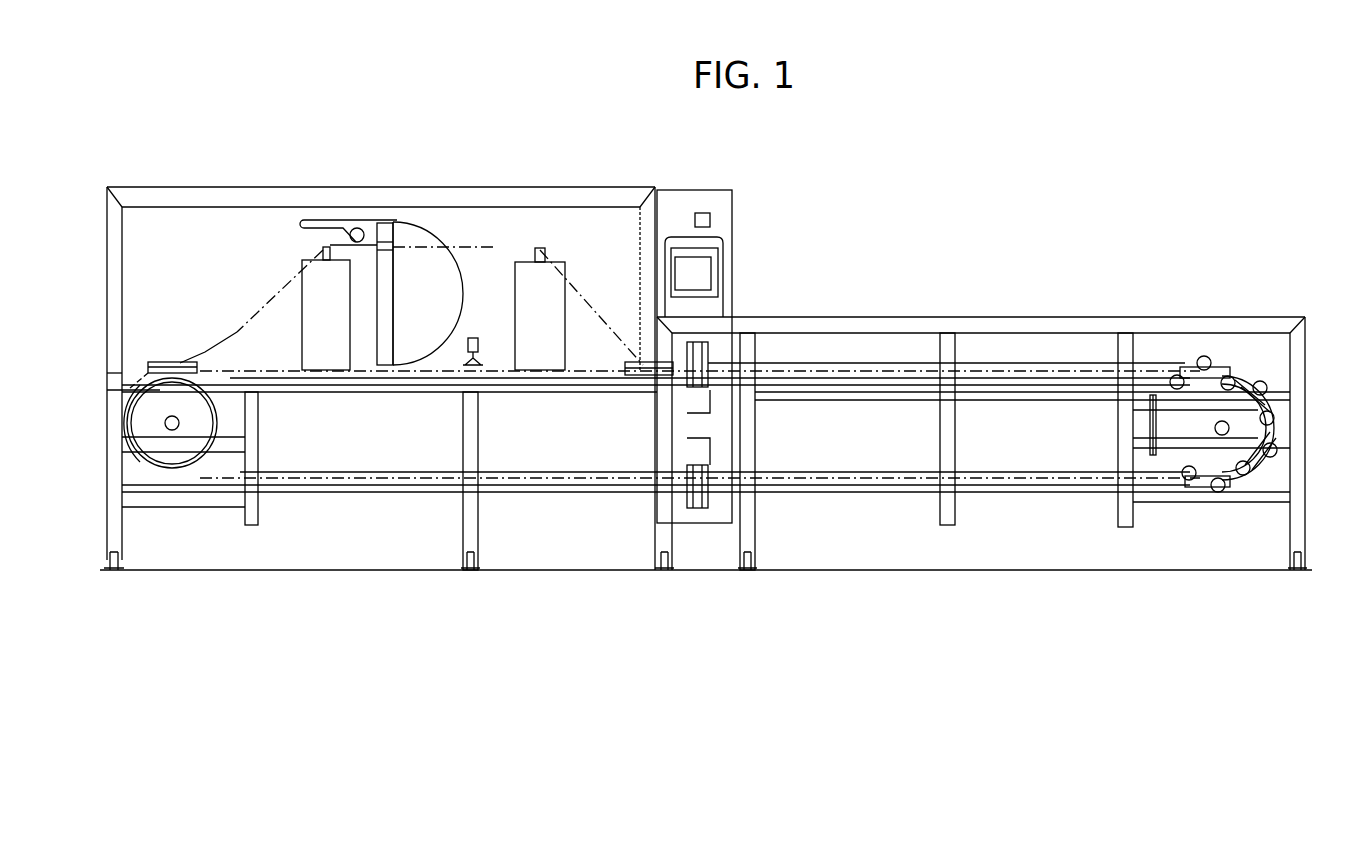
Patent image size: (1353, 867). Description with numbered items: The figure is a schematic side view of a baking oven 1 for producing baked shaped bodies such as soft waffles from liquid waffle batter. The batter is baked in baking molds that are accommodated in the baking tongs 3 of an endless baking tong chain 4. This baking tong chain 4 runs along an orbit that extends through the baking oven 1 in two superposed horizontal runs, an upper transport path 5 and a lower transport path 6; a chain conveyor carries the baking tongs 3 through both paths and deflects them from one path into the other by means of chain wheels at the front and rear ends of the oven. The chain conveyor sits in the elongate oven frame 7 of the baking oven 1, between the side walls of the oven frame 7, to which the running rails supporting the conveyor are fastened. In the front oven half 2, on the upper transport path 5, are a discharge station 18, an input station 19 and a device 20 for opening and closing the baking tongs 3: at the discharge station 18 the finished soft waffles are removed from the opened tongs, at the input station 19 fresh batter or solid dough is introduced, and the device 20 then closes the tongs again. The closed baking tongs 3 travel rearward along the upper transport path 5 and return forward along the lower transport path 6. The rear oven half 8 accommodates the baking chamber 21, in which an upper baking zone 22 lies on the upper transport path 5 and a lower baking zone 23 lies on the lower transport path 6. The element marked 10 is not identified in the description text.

The baking oven 1 is at (288, 165).
The front oven half 2 is at (160, 176).
The baking tongs 3 is at (147, 363).
The baking tong chain 4 is at (1188, 350).
The upper transport path 5 is at (1048, 368).
The lower transport path 6 is at (300, 478).
The oven frame 7 is at (440, 200).
The rear oven half 8 is at (875, 305).
The processing unit 10 is at (330, 295).
The discharge station 18 is at (415, 240).
The input station 19 is at (476, 338).
The device for opening and closing the baking tongs 20 is at (225, 337).
The baking chamber 21 is at (1003, 352).
The upper baking zone 22 is at (783, 365).
The lower baking zone 23 is at (795, 478).